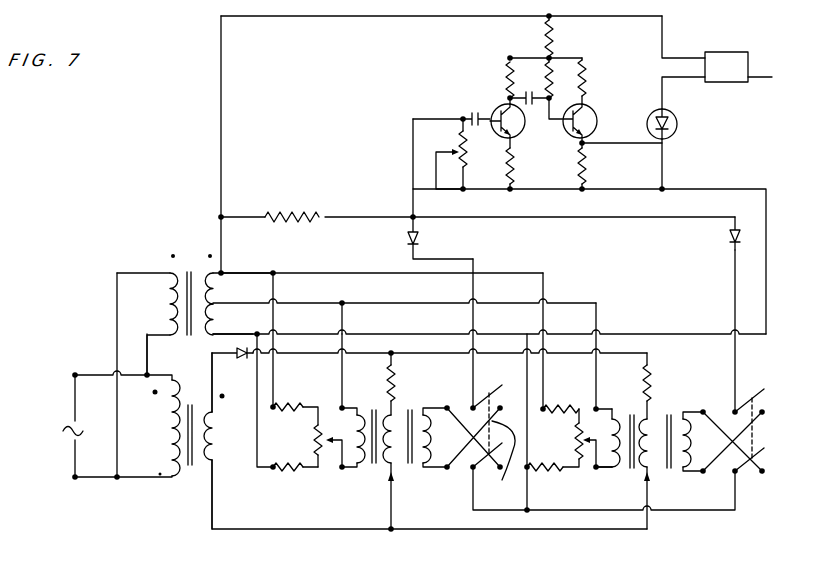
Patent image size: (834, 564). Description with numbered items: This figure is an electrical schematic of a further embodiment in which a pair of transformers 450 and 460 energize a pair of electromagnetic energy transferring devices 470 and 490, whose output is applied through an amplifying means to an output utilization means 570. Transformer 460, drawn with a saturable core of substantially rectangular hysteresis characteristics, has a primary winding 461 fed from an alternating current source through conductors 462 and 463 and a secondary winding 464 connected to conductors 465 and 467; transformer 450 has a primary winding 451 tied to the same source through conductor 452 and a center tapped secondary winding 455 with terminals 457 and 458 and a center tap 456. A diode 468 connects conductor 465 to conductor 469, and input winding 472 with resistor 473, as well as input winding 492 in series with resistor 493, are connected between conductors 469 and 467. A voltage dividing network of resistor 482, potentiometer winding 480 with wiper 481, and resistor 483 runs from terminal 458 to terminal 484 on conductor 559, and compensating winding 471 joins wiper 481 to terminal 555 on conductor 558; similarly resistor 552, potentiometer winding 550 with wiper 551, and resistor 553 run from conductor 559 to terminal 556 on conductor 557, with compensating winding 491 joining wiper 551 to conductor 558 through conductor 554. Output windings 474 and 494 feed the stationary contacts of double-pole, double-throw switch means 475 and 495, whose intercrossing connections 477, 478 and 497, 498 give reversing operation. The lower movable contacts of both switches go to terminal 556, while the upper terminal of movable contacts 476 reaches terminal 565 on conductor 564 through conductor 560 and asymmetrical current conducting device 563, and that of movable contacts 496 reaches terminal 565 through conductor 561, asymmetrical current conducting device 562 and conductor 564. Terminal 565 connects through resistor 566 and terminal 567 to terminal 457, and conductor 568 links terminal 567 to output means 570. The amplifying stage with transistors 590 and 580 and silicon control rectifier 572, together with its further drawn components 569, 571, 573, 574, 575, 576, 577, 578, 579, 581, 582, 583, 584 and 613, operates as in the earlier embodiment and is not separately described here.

The transformer 450 is at (197, 249).
The primary winding 451 is at (169, 300).
The conductor 452 is at (117, 315).
The secondary winding 455 is at (252, 273).
The center tap 456 is at (215, 297).
The terminal 457 is at (222, 270).
The terminal 458 is at (257, 333).
The transformer 460 is at (201, 501).
The primary winding 461 is at (170, 415).
The conductor 462 is at (148, 379).
The conductor 463 is at (168, 476).
The secondary winding 464 is at (250, 436).
The conductor 465 is at (232, 384).
The conductor 467 is at (213, 508).
The diode 468 is at (230, 350).
The conductor 469 is at (340, 350).
The electromagnetic energy transferring device 470 is at (390, 482).
The compensating winding 471 is at (357, 468).
The input winding 472 is at (392, 353).
The resistor 473 is at (392, 390).
The output winding 474 is at (426, 407).
The switch means 475 is at (462, 507).
The movable contacts 476 is at (501, 388).
The intercrossing connection 477 is at (462, 392).
The intercrossing connection 478 is at (507, 482).
The potentiometer winding 480 is at (317, 430).
The potentiometer wiper 481 is at (340, 447).
The resistor 482 is at (298, 403).
The resistor 483 is at (285, 470).
The terminal 484 is at (275, 271).
The electromagnetic energy transferring device 490 is at (647, 482).
The compensating winding 491 is at (612, 470).
The input winding 492 is at (650, 405).
The resistor 493 is at (650, 370).
The output winding 494 is at (686, 412).
The switch means 495 is at (646, 460).
The movable contacts 496 is at (765, 385).
The intercrossing 497 is at (718, 443).
The intercrossing 498 is at (752, 433).
The potentiometer winding 550 is at (576, 445).
The wiper 551 is at (400, 333).
The resistor 552 is at (578, 388).
The resistor 553 is at (553, 473).
The conductor 554 is at (597, 402).
The terminal 555 is at (350, 288).
The terminal 556 is at (527, 337).
The conductor 557 is at (766, 190).
The conductor 558 is at (400, 303).
The conductor 559 is at (543, 276).
The conductor 560 is at (475, 262).
The conductor 561 is at (733, 300).
The asymmetrical current conducting device 562 is at (733, 242).
The asymmetrical current conducting device 563 is at (416, 235).
The conductor 564 is at (485, 218).
The terminal 565 is at (411, 214).
The resistor 566 is at (322, 212).
The terminal 567 is at (222, 216).
The conductor 568 is at (222, 160).
The junction 569 is at (548, 18).
The output utilization means 570 is at (790, 68).
The lead 571 is at (664, 98).
The silicon control rectifier 572 is at (678, 124).
The lead 573 is at (664, 172).
The resistor 574 is at (585, 178).
The resistor 575 is at (585, 82).
The resistor 576 is at (553, 40).
The resistor 577 is at (553, 72).
The resistor 578 is at (508, 60).
The capacitor 579 is at (527, 90).
The transistor 580 is at (598, 120).
The resistor 581 is at (513, 165).
The potentiometer 582 is at (466, 160).
The wiper 583 is at (455, 152).
The lead 584 is at (413, 165).
The transistor 590 is at (516, 131).
The capacitor 613 is at (474, 112).